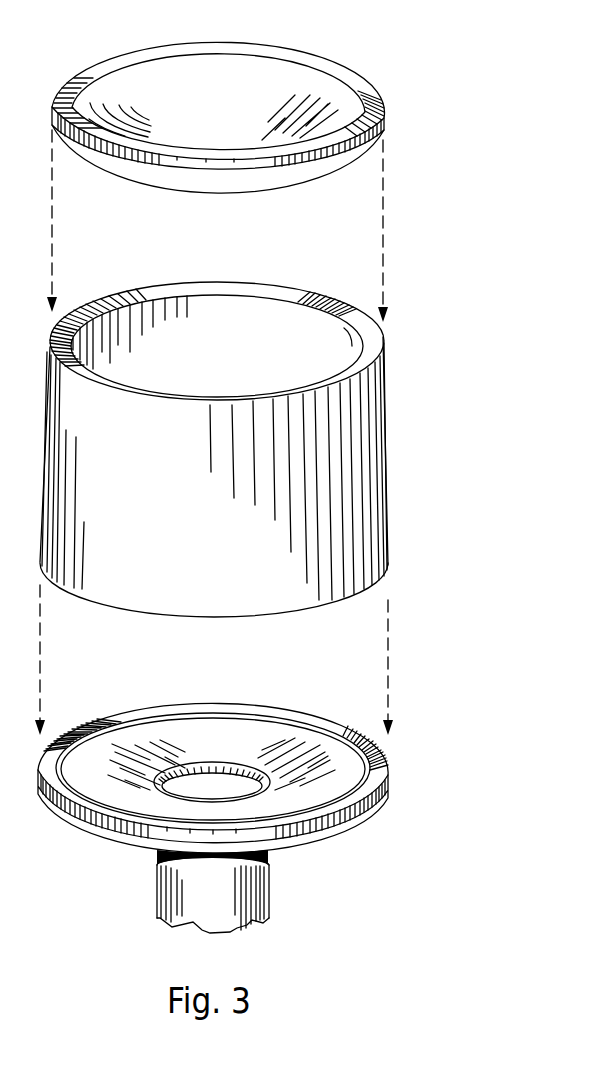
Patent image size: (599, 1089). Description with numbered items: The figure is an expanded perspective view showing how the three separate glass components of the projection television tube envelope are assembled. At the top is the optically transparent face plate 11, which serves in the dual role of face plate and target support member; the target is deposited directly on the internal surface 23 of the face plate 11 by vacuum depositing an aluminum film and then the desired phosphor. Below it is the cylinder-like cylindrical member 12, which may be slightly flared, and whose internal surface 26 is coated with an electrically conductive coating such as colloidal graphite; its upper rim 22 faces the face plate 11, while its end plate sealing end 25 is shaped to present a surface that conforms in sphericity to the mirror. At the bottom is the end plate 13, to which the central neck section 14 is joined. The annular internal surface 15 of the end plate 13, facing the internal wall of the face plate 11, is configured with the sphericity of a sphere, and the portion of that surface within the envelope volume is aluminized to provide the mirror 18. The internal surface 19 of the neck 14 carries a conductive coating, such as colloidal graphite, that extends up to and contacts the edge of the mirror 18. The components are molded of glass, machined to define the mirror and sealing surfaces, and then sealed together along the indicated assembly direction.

The face plate 11 is at (254, 114).
The internal surface of face plate 23 is at (322, 163).
The cylindrical member 12 is at (249, 447).
The upper rim of body 22 is at (372, 336).
The internal surface of cylindrical member 26 is at (345, 305).
The end plate sealing end 25 is at (372, 581).
The end plate 13 is at (247, 818).
The annular internal surface of end plate 15 is at (375, 773).
The mirror 18 is at (345, 761).
The internal surface of neck 19 is at (259, 791).
The neck section 14 is at (252, 907).